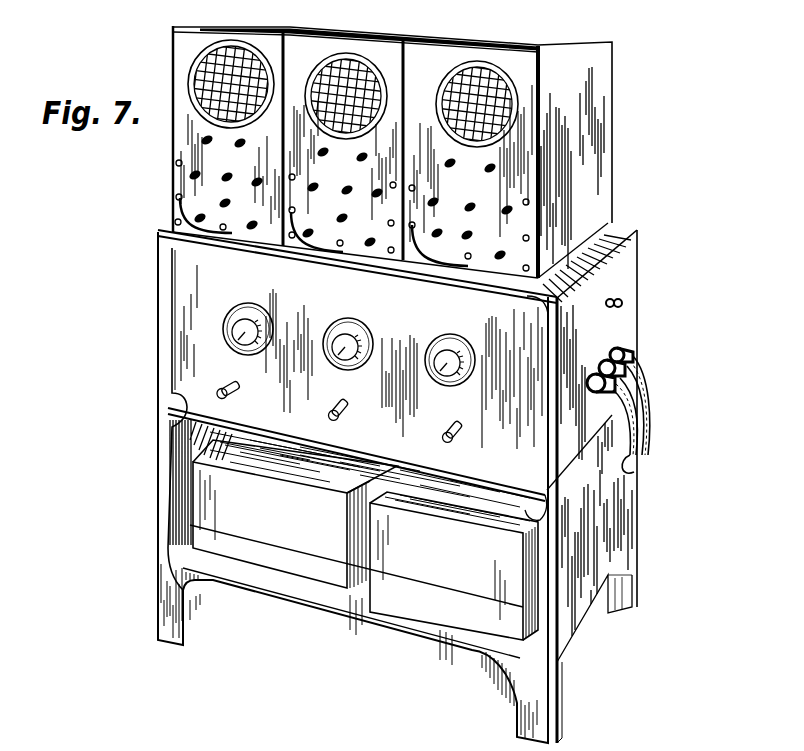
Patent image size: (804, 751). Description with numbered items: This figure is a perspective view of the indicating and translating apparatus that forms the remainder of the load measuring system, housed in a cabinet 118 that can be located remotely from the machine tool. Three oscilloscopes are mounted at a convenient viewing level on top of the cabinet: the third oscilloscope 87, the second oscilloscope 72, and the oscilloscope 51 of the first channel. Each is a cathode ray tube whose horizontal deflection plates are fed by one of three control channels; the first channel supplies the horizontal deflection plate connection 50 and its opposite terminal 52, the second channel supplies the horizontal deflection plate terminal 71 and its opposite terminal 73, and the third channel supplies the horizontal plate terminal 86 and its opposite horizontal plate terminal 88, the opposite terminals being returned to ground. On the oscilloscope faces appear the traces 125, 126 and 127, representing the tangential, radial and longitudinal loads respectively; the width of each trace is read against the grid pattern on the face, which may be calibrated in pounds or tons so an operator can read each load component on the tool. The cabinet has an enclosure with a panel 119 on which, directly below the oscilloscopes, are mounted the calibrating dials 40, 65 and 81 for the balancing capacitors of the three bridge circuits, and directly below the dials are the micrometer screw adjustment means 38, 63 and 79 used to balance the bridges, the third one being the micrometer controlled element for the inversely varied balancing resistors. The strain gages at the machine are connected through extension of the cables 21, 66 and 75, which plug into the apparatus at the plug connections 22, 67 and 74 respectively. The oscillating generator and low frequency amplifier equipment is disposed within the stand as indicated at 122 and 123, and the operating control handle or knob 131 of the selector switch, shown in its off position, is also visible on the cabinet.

The third oscilloscope 87 is at (173, 30).
The trace 127 is at (238, 88).
The trace 126 is at (348, 93).
The trace 125 is at (478, 103).
The second oscilloscope 72 is at (401, 44).
The oscilloscope 51 is at (533, 58).
The horizontal plate terminal 86 is at (174, 191).
The horizontal deflection plate terminal 71 is at (215, 247).
The horizontal plate terminal 88 is at (272, 244).
The control dial 81 is at (245, 331).
The micrometer controlled element 79 is at (220, 388).
The calibrating dial 65 is at (338, 346).
The micrometer screw adjustment means 63 is at (347, 415).
The calibrating dial 40 is at (447, 366).
The micrometer screw adjustment means 38 is at (460, 437).
The horizontal deflection plate connection 50 is at (392, 247).
The horizontal deflection plate terminal 73 is at (390, 254).
The cabinet 118 is at (637, 246).
The horizontal deflection plate terminal 52 is at (575, 268).
The operating control handle or knob 131 is at (624, 305).
The plug connection 22 is at (622, 356).
The plug connection 67 is at (628, 371).
The plug connection 74 is at (637, 386).
The cable 21 is at (650, 416).
The cable 66 is at (644, 448).
The cable connection 75 is at (640, 466).
The panel 119 is at (527, 453).
The oscillating generator and low frequency amplifier equipment 122 is at (257, 530).
The oscillating generator and low frequency amplifier equipment 123 is at (432, 575).